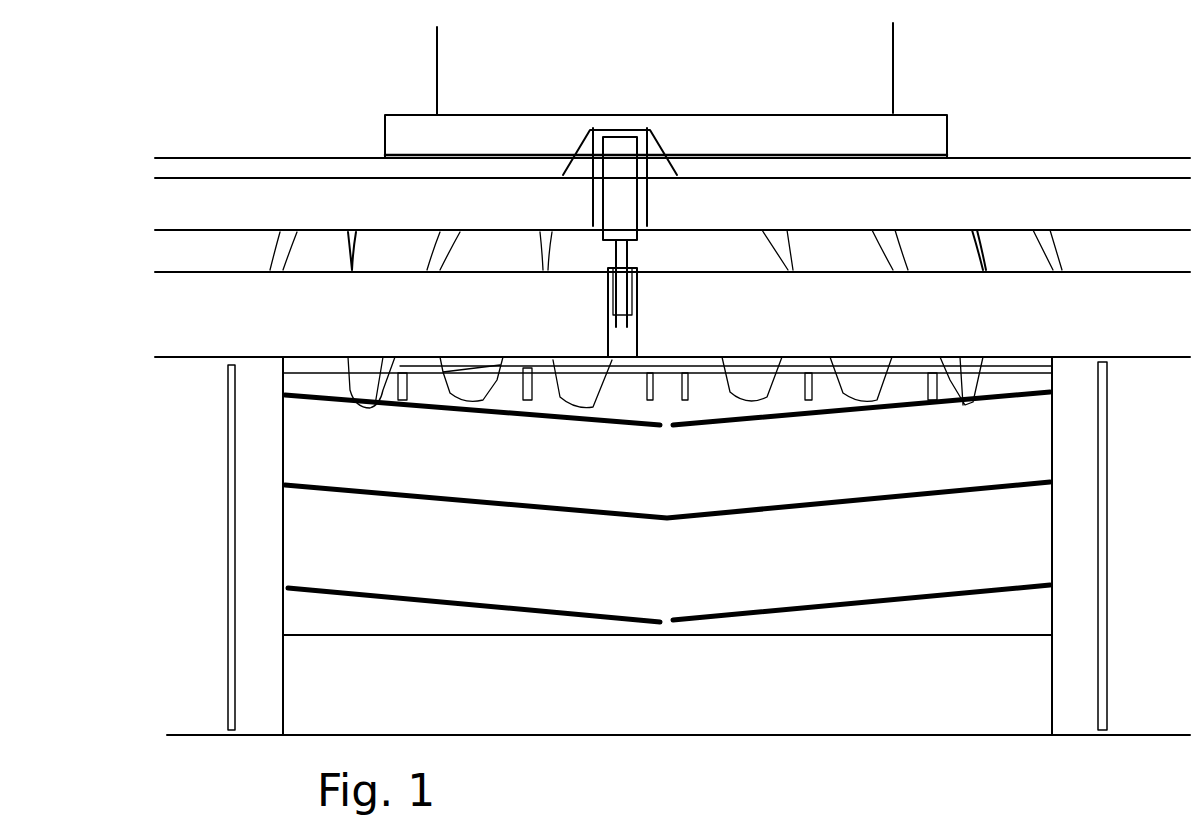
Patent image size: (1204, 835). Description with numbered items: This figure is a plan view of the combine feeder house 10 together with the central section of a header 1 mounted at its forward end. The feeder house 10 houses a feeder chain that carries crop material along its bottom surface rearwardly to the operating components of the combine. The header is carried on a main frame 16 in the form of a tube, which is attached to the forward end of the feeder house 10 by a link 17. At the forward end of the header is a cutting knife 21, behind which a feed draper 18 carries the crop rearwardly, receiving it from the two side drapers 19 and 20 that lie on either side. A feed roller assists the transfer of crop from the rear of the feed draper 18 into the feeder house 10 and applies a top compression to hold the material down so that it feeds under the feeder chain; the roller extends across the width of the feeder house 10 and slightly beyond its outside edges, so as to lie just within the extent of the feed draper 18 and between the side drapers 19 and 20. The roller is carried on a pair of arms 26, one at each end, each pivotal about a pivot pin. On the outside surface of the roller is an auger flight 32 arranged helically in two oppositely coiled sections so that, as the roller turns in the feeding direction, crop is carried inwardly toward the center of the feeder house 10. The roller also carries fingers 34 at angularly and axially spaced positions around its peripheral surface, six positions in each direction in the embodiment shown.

The apparatus 1 is at (872, 83).
The feeder house 10 is at (600, 78).
The link 17 is at (625, 200).
The arms 26 is at (1002, 252).
The main frame 16 is at (397, 405).
The auger flight 32 is at (488, 400).
The fingers 34 is at (535, 392).
The feed draper 18 is at (303, 539).
The side draper 19 is at (205, 687).
The side drapers 20 is at (1155, 630).
The cutting knife 21 is at (483, 735).